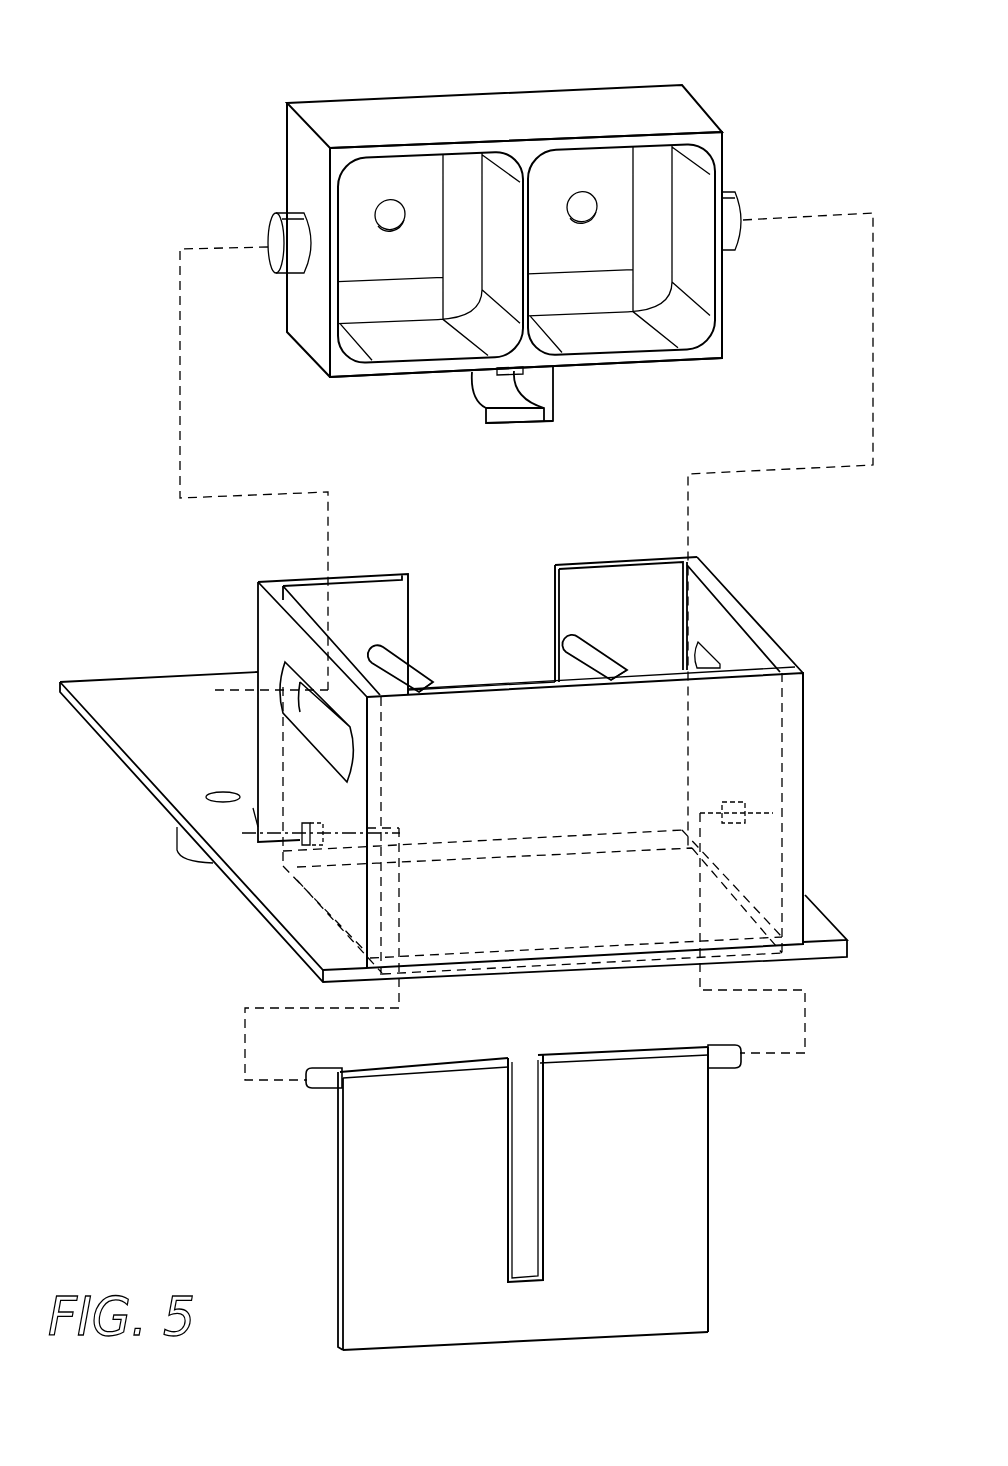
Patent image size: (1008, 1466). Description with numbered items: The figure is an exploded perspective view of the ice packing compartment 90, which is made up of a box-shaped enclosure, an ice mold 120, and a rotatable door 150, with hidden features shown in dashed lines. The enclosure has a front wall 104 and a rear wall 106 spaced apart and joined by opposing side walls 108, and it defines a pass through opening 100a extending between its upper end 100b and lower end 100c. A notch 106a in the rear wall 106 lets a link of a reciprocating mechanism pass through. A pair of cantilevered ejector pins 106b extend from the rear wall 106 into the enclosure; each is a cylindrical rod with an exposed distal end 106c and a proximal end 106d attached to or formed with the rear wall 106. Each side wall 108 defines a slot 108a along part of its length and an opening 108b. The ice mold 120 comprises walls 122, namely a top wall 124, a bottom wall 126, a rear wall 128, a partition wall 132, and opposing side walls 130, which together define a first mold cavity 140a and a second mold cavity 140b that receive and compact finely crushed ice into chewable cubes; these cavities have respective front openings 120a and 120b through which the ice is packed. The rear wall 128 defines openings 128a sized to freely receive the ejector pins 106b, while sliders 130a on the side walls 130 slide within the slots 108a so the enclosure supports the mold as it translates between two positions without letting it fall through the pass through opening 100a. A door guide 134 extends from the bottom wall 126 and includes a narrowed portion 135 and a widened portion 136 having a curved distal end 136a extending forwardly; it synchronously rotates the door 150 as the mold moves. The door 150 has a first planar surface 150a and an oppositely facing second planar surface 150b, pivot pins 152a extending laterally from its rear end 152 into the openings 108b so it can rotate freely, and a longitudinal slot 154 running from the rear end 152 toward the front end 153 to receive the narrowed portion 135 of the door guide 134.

The ice packing compartment 90 is at (150, 56).
The pass through opening 100a is at (345, 910).
The upper end 100b is at (793, 657).
The lower end 100c is at (830, 958).
The front wall 104 is at (750, 737).
The rear wall 106 is at (588, 565).
The notch 106a is at (465, 606).
The ejector pin 106b is at (622, 652).
The distal end 106c is at (425, 688).
The proximal end 106d is at (383, 650).
The side wall 108 is at (273, 638).
The slot 108a is at (303, 725).
The opening 108b is at (303, 833).
The ice mold 120 is at (150, 193).
The front opening 120a is at (356, 310).
The front opening 120b is at (703, 275).
The walls 122 is at (296, 178).
The top wall 124 is at (650, 95).
The bottom wall 126 is at (388, 382).
The rear wall 128 is at (357, 262).
The opening 128a is at (390, 203).
The side wall 130 is at (292, 143).
The slider 130a is at (262, 237).
The partition wall 132 is at (528, 245).
The door guide 134 is at (574, 409).
The narrowed portion 135 is at (544, 421).
The widened portion 136 is at (566, 383).
The curved distal end 136a is at (507, 423).
The first mold cavity 140a is at (421, 338).
The second mold cavity 140b is at (640, 335).
The rotatable door 150 is at (768, 1209).
The first planar surface 150a is at (698, 1300).
The second planar surface 150b is at (388, 1315).
The rear end 152 is at (365, 1066).
The pivot pin 152a is at (322, 1089).
The front end 153 is at (577, 1340).
The longitudinal slot 154 is at (529, 1217).